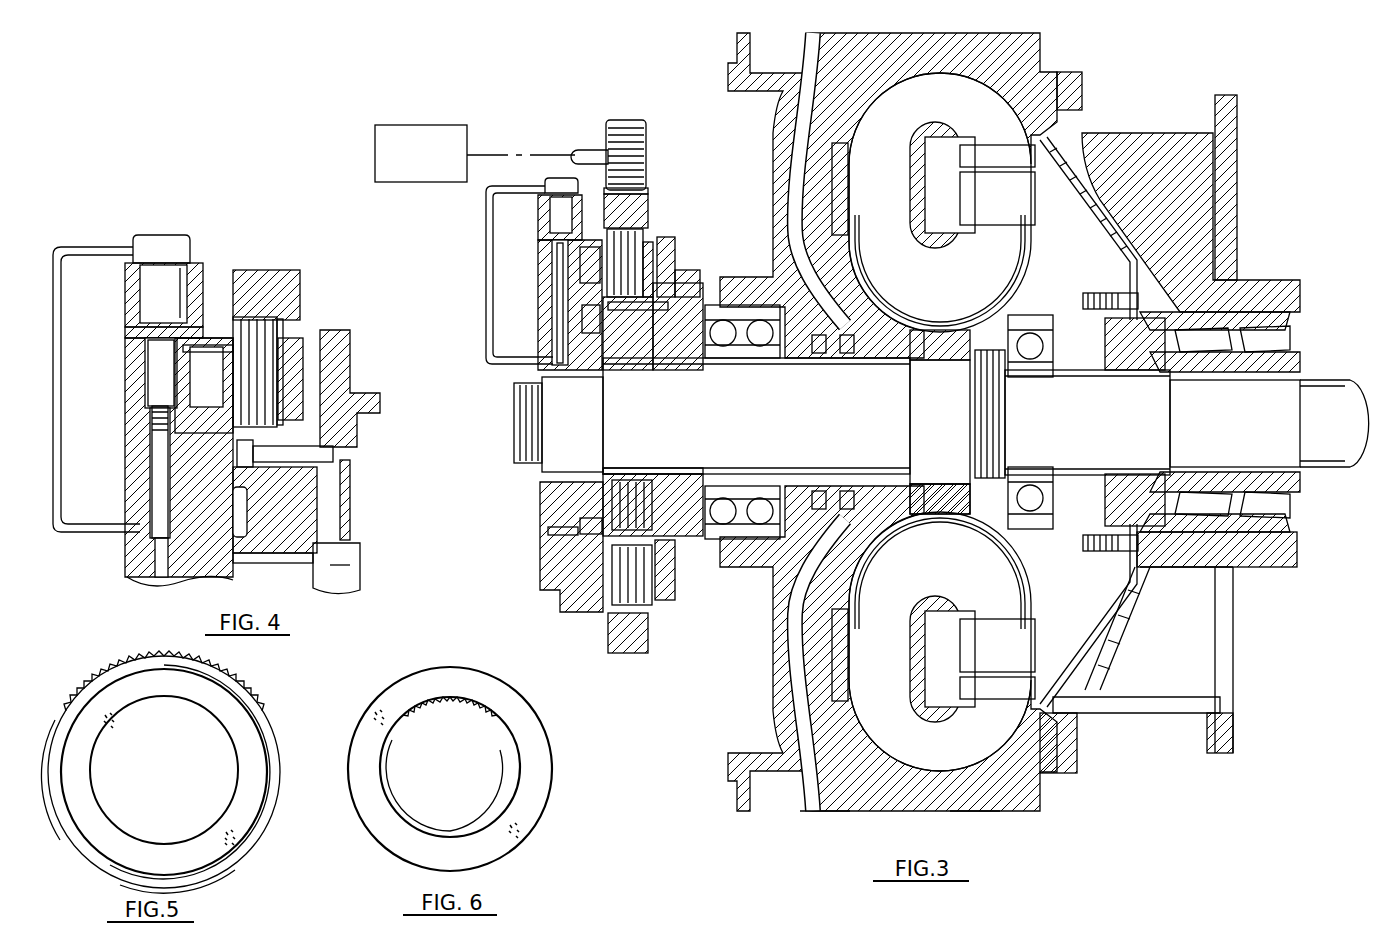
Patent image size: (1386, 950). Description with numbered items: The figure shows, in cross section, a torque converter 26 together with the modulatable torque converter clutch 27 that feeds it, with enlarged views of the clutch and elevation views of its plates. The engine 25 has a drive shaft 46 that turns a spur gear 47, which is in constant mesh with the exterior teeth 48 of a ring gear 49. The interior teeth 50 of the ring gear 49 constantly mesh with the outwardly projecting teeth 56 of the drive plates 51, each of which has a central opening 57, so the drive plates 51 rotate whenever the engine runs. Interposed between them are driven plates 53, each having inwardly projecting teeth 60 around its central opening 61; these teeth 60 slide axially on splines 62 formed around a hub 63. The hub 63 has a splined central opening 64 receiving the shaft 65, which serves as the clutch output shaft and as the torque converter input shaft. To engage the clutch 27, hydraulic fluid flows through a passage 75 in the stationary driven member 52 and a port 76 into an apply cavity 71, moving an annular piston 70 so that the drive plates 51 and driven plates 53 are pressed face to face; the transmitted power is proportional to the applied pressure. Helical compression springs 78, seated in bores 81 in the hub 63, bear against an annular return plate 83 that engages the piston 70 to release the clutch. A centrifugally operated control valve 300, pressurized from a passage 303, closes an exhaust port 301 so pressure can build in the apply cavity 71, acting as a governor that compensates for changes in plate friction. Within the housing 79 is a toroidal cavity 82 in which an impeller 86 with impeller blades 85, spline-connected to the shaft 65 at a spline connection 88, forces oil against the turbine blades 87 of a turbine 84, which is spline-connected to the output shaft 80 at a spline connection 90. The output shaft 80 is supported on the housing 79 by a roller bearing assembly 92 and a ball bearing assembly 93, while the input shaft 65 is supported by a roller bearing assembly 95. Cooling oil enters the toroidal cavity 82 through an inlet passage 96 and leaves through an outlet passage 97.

In FIG. 3, the engine 25 is at (426, 122).
In FIG. 3, the torque converter 26 is at (1130, 70).
In FIG. 3, the torque converter clutch 27 is at (507, 212).
In FIG. 4, the torque converter clutch 27 is at (382, 313).
In FIG. 3, the drive shaft 46 is at (584, 148).
In FIG. 3, the spur gear 47 is at (628, 120).
In FIG. 3, the exterior teeth 48 is at (648, 192).
In FIG. 3, the ring gear 49 is at (645, 212).
In FIG. 4, the ring gear 49 is at (295, 279).
In FIG. 3, the interior teeth 50 is at (648, 236).
In FIG. 4, the interior teeth 50 is at (290, 318).
In FIG. 3, the drive plates 51 is at (648, 615).
In FIG. 4, the drive plates 51 is at (292, 338).
In FIG. 5, the drive plates 51 is at (242, 710).
In FIG. 3, the driven member 52 is at (545, 490).
In FIG. 4, the driven member 52 is at (135, 549).
In FIG. 3, the driven plates 53 is at (650, 590).
In FIG. 4, the driven plates 53 is at (236, 320).
In FIG. 6, the driven plates 53 is at (520, 830).
In FIG. 5, the outwardly projecting teeth 56 is at (200, 668).
In FIG. 5, the central opening 57 is at (238, 752).
In FIG. 6, the inwardly projecting teeth 60 is at (449, 712).
In FIG. 6, the central opening 61 is at (495, 758).
In FIG. 4, the splines 62 is at (322, 429).
In FIG. 3, the hub 63 is at (619, 360).
In FIG. 4, the hub 63 is at (271, 530).
In FIG. 3, the splined central opening 64 is at (638, 468).
In FIG. 4, the splined central opening 64 is at (288, 563).
In FIG. 3, the shaft 65 is at (743, 432).
In FIG. 4, the shaft 65 is at (337, 575).
In FIG. 3, the annular piston 70 is at (591, 245).
In FIG. 4, the annular piston 70 is at (200, 390).
In FIG. 4, the apply cavity 71 is at (208, 344).
In FIG. 3, the passage 75 is at (552, 342).
In FIG. 4, the passage 75 is at (152, 496).
In FIG. 3, the port 76 is at (548, 265).
In FIG. 4, the port 76 is at (172, 369).
In FIG. 3, the spring 78 is at (622, 515).
In FIG. 3, the housing 79 is at (1152, 150).
In FIG. 3, the output shaft 80 is at (1096, 419).
In FIG. 3, the bore 81 is at (586, 516).
In FIG. 3, the toroidal cavity 82 is at (950, 78).
In FIG. 3, the annular return plate 83 is at (580, 322).
In FIG. 3, the turbine 84 is at (1065, 200).
In FIG. 3, the impeller blades 85 is at (982, 203).
In FIG. 3, the impeller 86 is at (1010, 290).
In FIG. 3, the turbine blades 87 is at (985, 150).
In FIG. 3, the spline connection 88 is at (948, 362).
In FIG. 3, the spline connection 90 is at (1278, 376).
In FIG. 3, the anti-friction roller bearing assembly 92 is at (1285, 330).
In FIG. 3, the ball bearing assembly 93 is at (1036, 322).
In FIG. 3, the roller bearing assembly 95 is at (748, 310).
In FIG. 3, the cooling oil inlet passage 96 is at (978, 806).
In FIG. 3, the outlet passage 97 is at (850, 806).
In FIG. 4, the centrifugally operated control valve 300 is at (145, 280).
In FIG. 4, the exhaust port 301 is at (150, 346).
In FIG. 3, the passage 303 is at (497, 293).
In FIG. 4, the passage 303 is at (62, 428).